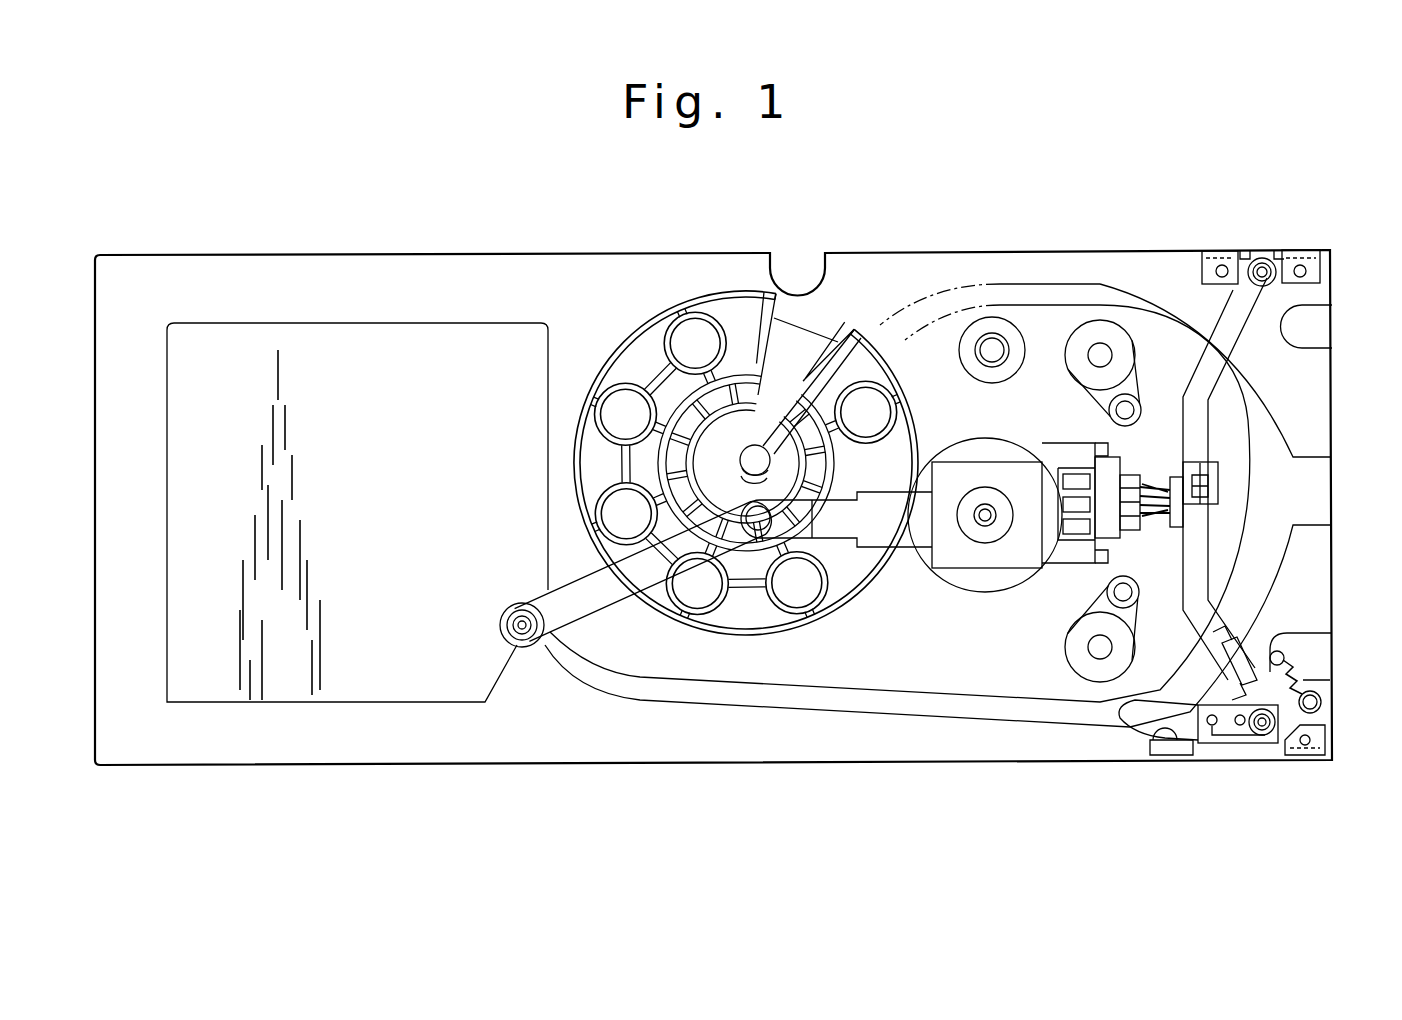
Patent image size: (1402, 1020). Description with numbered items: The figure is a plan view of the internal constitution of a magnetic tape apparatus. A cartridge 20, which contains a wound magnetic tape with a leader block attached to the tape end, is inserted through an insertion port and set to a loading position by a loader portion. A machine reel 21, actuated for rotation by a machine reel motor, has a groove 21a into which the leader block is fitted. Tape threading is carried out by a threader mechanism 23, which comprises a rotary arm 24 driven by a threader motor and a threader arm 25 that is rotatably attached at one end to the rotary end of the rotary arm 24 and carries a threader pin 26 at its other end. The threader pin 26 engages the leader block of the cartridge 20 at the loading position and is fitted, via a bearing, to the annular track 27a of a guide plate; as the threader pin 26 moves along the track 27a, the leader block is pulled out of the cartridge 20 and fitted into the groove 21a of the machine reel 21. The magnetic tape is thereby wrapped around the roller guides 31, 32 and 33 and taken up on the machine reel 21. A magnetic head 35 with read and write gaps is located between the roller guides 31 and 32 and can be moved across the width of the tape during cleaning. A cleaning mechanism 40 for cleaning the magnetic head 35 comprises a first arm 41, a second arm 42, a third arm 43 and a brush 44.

The cartridge 20 is at (293, 690).
The machine reel 21 is at (665, 315).
The groove 21a is at (793, 338).
The threader mechanism 23 is at (723, 671).
The rotary arm 24 is at (833, 530).
The threader arm 25 is at (727, 540).
The threader pin 26 is at (520, 647).
The track 27a is at (925, 722).
The roller guide 31 is at (1097, 672).
The roller guide 32 is at (1096, 320).
The roller guide 33 is at (990, 318).
The magnetic head 35 is at (1190, 460).
The cleaning mechanism 40 is at (1171, 628).
The first arm 41 is at (1200, 570).
The second arm 42 is at (1200, 427).
The third arm 43 is at (1197, 737).
The brush 44 is at (1183, 523).